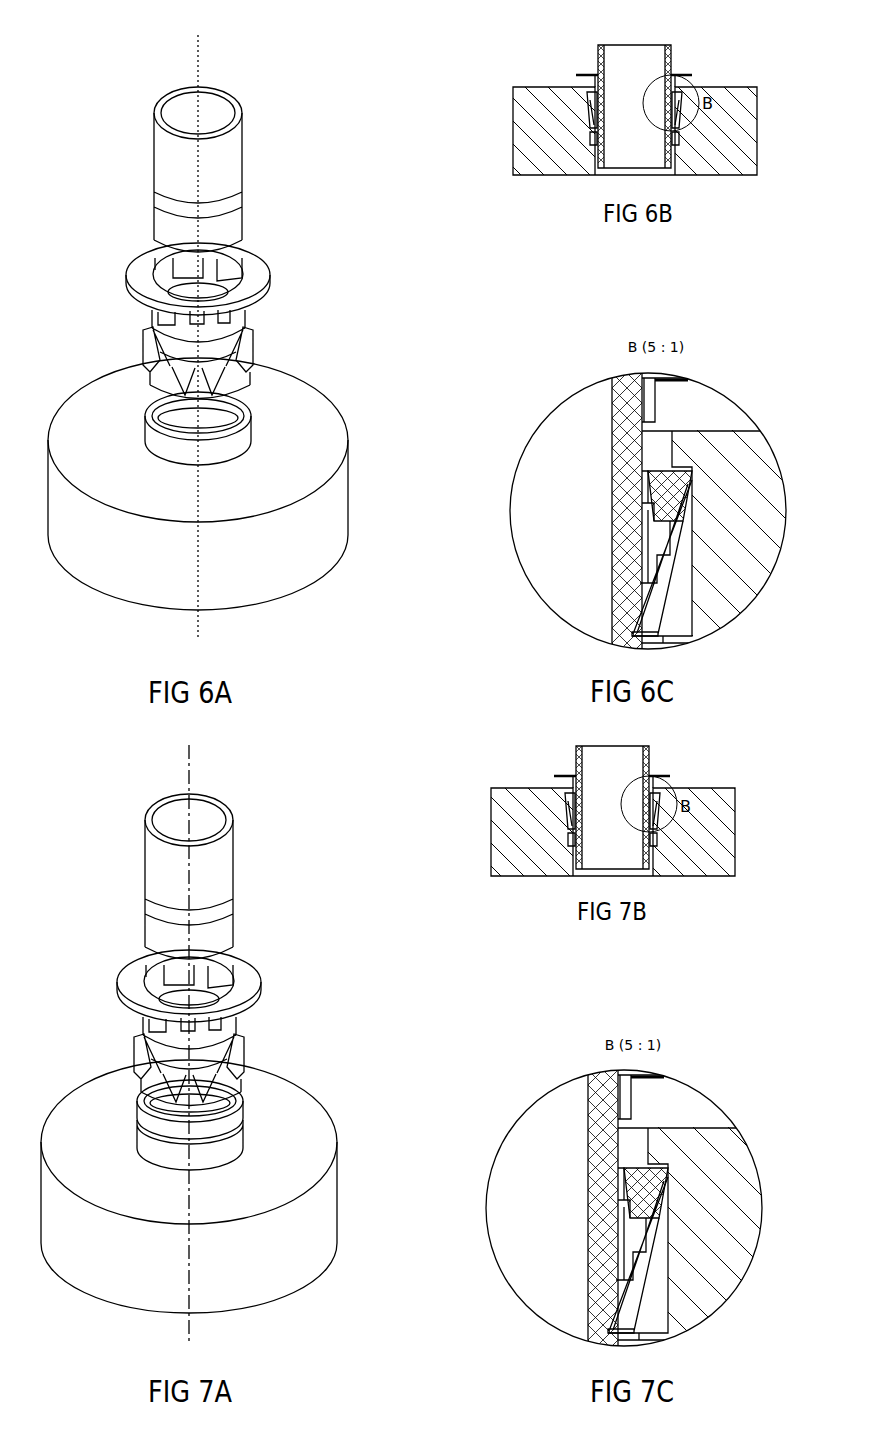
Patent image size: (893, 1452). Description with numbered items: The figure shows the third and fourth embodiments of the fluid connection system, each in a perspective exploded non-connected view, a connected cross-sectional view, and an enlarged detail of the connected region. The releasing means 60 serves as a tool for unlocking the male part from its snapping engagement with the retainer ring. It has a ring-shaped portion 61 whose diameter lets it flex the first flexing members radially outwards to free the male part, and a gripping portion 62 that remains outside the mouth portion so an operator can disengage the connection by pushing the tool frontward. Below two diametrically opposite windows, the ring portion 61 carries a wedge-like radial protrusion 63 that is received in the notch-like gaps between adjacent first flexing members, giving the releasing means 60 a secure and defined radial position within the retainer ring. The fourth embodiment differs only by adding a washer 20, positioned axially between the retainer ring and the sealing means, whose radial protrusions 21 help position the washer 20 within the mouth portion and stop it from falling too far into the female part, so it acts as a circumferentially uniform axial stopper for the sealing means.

In FIG. 7A, the washer 20 is at (235, 1103).
In FIG. 7B, the washer 20 is at (573, 830).
In FIG. 7C, the washer 20 is at (657, 1335).
In FIG. 7A, the radial protrusions 21 is at (148, 1122).
In FIG. 6A, the releasing means 60 is at (255, 266).
In FIG. 6C, the ring-shaped portion 61 is at (652, 570).
In FIG. 6B, the gripping portion 62 is at (692, 74).
In FIG. 6C, the gripping portion 62 is at (668, 380).
In FIG. 6C, the radial protrusion 63 is at (663, 540).